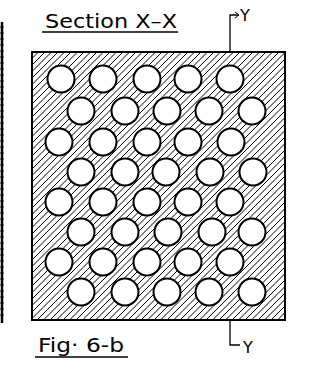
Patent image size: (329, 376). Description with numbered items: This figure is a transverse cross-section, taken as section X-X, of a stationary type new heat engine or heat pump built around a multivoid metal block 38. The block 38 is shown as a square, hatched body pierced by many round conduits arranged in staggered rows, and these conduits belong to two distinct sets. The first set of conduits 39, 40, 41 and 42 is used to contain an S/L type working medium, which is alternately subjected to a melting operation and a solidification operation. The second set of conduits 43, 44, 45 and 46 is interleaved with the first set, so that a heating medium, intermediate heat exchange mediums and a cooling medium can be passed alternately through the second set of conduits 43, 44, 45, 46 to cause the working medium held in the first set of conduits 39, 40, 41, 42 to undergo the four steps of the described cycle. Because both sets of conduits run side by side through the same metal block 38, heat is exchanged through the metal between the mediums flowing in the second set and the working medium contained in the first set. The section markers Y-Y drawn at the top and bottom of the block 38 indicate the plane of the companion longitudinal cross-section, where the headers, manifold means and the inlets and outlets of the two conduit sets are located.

The perforated plate (section X-X) 38 is at (179, 319).
The first set of conduits 39 is at (60, 78).
The first set of conduits 40 is at (58, 141).
The first set of conduits 41 is at (58, 201).
The first set of conduits 42 is at (58, 261).
The second set of conduits 43 is at (80, 109).
The second set of conduits 44 is at (80, 170).
The second set of conduits 45 is at (80, 230).
The second set of conduits 46 is at (80, 290).